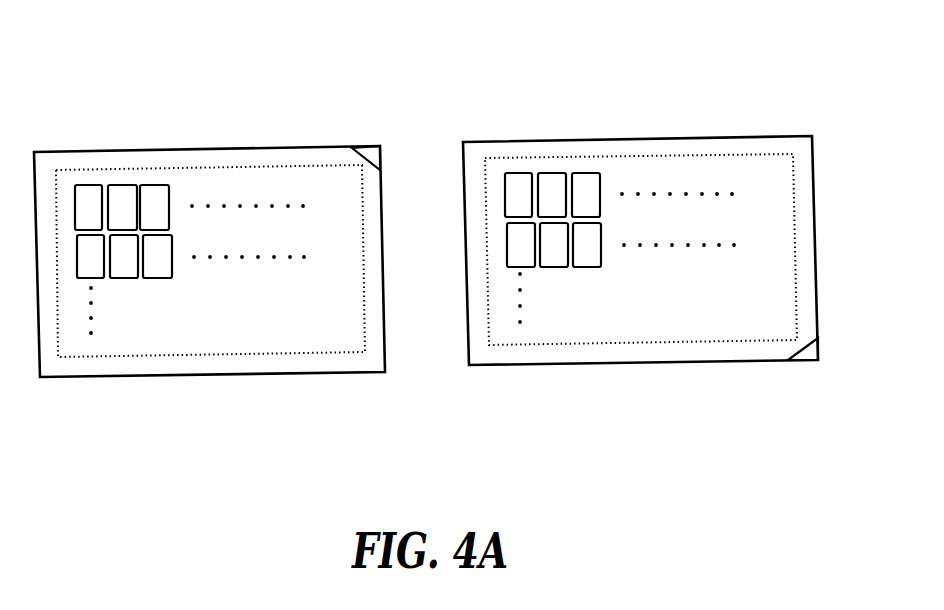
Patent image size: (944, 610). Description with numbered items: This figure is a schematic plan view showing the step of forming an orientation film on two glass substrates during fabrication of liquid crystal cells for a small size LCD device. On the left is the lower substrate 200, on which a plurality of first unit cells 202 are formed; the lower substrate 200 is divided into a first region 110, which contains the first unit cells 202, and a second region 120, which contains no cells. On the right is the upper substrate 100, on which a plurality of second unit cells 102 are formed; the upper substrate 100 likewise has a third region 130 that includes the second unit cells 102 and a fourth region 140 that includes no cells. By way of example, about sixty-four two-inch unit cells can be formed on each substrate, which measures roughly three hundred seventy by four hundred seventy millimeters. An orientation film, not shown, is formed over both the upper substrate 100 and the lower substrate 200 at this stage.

The upper substrate 100 is at (640, 228).
The second unit cell 102 is at (516, 183).
The third region 130 is at (608, 325).
The fourth region 140 is at (527, 355).
The lower substrate 200 is at (209, 230).
The first unit cell 202 is at (88, 194).
The first region 110 is at (193, 342).
The second region 120 is at (103, 367).